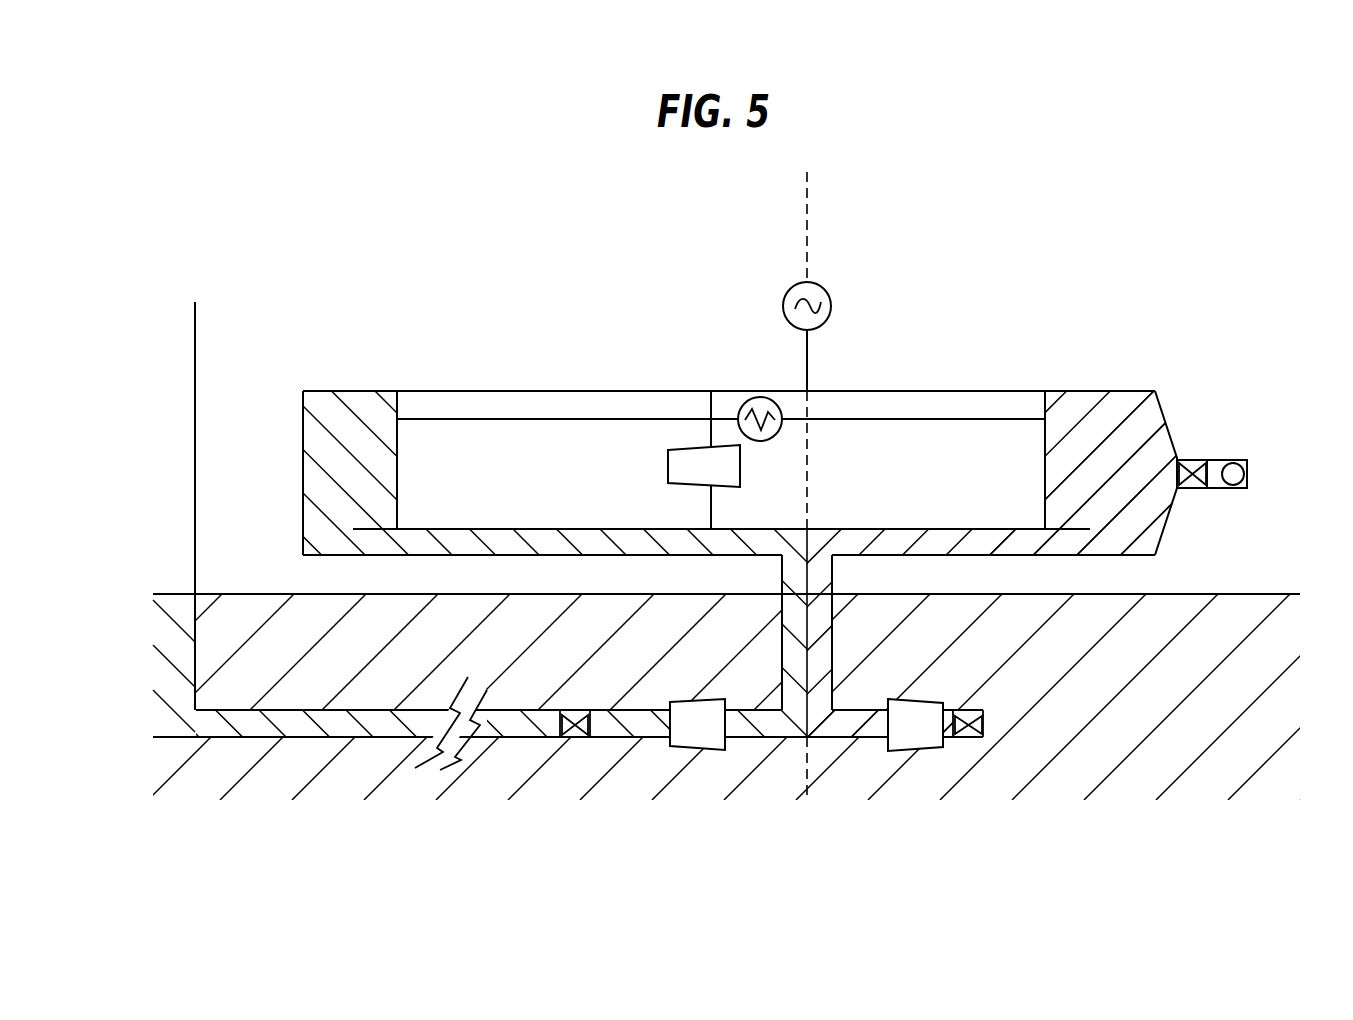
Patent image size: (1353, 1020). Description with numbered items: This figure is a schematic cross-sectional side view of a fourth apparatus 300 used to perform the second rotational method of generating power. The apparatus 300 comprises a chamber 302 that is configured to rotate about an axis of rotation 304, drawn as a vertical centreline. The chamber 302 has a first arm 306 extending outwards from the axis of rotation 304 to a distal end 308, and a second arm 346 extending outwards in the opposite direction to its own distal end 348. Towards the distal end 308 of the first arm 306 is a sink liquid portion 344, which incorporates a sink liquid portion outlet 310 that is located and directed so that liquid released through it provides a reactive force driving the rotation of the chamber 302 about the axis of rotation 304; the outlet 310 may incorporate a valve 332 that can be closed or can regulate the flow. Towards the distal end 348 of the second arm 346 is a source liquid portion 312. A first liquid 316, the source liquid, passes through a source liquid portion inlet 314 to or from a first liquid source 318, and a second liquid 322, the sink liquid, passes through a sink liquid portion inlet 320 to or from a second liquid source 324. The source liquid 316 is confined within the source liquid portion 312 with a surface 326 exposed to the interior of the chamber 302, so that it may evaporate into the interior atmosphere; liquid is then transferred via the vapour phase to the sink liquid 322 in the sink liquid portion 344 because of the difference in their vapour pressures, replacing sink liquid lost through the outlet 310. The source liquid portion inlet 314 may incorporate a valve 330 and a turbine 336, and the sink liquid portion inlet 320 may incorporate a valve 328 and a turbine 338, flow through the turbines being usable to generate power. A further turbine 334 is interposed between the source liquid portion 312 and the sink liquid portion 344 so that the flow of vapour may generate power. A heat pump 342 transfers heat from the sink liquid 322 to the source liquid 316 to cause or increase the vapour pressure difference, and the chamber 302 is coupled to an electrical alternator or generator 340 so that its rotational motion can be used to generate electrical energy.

The apparatus 300 is at (873, 337).
The chamber 302 is at (597, 413).
The axis of rotation 304 is at (808, 190).
The first arm 306 is at (960, 391).
The distal end 308 is at (1173, 415).
The sink liquid portion outlet 310 is at (1235, 475).
The source liquid portion 312 is at (343, 390).
The source liquid portion inlet 314 is at (677, 545).
The first liquid 316 is at (322, 487).
The first liquid source 318 is at (172, 635).
The sink liquid portion inlet 320 is at (935, 545).
The second liquid 322 is at (1137, 510).
The second liquid source 324 is at (1172, 689).
The surface 326 is at (397, 451).
The valve 328 is at (950, 743).
The valve 330 is at (575, 713).
The valve 332 is at (1190, 467).
The turbine 334 is at (690, 463).
The turbine 336 is at (700, 702).
The turbine 338 is at (895, 700).
The electrical alternator or generator 340 is at (785, 292).
The heat pump 342 is at (763, 396).
The sink liquid portion 344 is at (1095, 398).
The second arm 346 is at (538, 390).
The distal end 348 is at (382, 390).